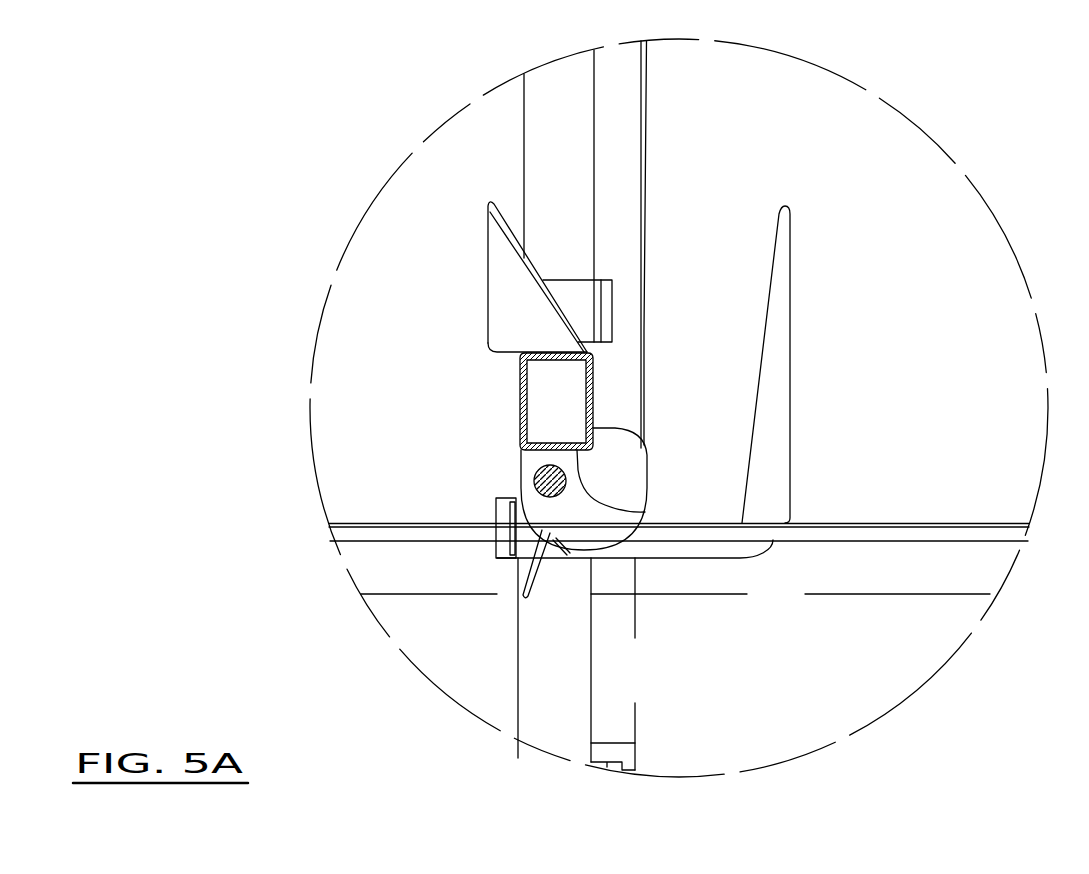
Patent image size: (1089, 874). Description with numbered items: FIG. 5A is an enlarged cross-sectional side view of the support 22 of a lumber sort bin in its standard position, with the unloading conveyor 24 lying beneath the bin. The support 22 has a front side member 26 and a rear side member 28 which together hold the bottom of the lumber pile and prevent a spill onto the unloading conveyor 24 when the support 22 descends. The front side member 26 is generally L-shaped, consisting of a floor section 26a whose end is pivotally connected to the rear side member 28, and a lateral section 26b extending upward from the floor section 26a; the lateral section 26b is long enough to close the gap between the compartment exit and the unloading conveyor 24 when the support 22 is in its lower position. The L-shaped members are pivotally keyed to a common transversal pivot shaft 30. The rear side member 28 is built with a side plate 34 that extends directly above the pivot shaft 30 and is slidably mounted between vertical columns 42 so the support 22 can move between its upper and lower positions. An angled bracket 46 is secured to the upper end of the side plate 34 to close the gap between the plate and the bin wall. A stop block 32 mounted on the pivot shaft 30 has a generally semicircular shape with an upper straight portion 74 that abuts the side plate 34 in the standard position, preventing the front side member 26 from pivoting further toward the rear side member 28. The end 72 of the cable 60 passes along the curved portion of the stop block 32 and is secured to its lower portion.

The support 22 is at (833, 100).
The unloading conveyor 24 is at (973, 577).
The front side member 26 is at (781, 565).
The floor section 26a is at (703, 557).
The lateral section 26b is at (773, 353).
The rear side member 28 is at (484, 453).
The pivot shaft 30 is at (534, 483).
The stop block 32 is at (640, 484).
The side plate 34 is at (519, 412).
The vertical column 42 is at (527, 176).
The angled bracket 46 is at (498, 280).
The cable 60 is at (645, 137).
The end of cable 72 is at (513, 598).
The upper straight portion 74 is at (593, 420).